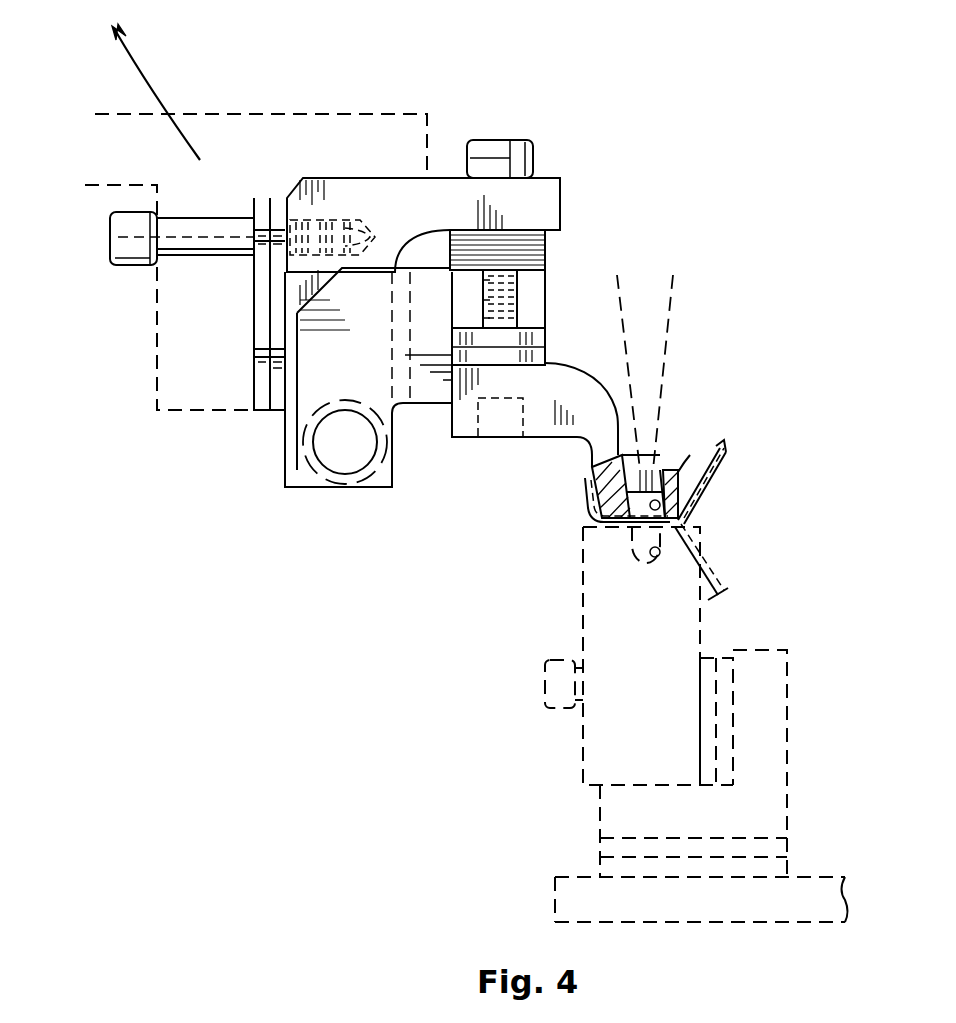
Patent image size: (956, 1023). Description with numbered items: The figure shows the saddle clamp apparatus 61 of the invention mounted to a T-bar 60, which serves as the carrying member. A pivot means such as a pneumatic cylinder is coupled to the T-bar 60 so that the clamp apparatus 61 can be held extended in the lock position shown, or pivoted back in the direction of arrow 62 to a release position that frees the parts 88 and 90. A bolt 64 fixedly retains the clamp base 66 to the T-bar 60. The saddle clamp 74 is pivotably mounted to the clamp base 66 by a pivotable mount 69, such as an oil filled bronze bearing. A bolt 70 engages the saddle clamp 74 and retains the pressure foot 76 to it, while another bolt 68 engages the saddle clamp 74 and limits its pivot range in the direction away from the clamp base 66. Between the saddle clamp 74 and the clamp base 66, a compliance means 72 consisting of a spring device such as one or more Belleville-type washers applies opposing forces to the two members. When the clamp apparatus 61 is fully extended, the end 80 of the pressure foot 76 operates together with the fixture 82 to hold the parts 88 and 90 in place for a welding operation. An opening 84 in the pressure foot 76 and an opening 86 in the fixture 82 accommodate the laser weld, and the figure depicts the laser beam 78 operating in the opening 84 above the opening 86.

The T-bar 60 is at (287, 132).
The clamp apparatus 61 is at (575, 100).
The arrow 62 is at (172, 88).
The bolt 64 is at (130, 265).
The clamp base 66 is at (433, 190).
The bolt 68 is at (536, 150).
The pivotable mount 69 is at (322, 448).
The bolt 70 is at (505, 437).
The compliance means 72 is at (545, 248).
The saddle clamp 74 is at (423, 390).
The pressure foot 76 is at (568, 390).
The laser beam 78 is at (670, 342).
The end of pressure foot 80 is at (690, 455).
The fixture 82 is at (573, 635).
The opening 84 is at (660, 505).
The opening 86 is at (660, 552).
The part 88 is at (705, 470).
The part 90 is at (722, 590).